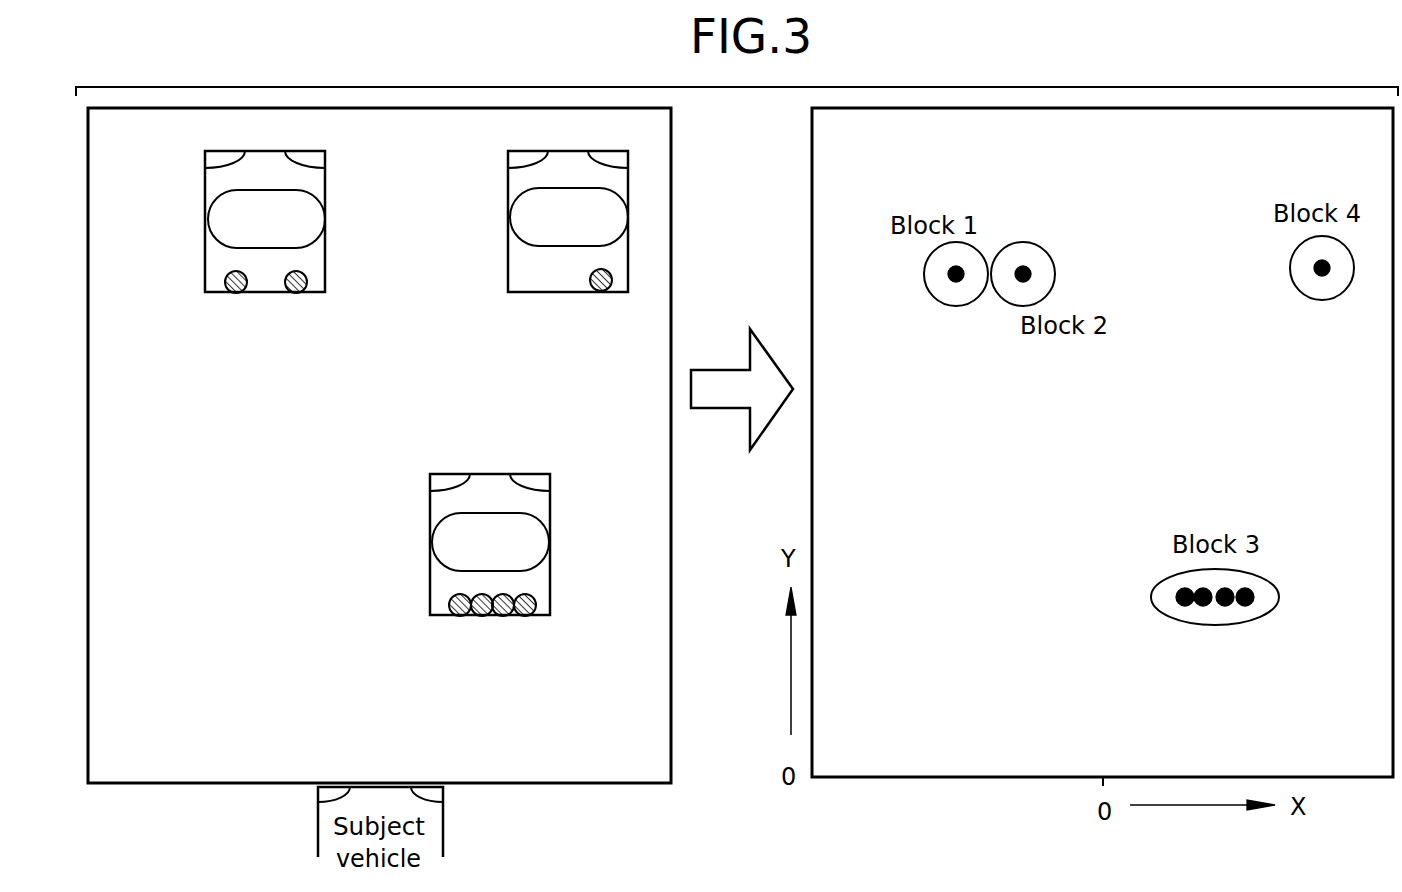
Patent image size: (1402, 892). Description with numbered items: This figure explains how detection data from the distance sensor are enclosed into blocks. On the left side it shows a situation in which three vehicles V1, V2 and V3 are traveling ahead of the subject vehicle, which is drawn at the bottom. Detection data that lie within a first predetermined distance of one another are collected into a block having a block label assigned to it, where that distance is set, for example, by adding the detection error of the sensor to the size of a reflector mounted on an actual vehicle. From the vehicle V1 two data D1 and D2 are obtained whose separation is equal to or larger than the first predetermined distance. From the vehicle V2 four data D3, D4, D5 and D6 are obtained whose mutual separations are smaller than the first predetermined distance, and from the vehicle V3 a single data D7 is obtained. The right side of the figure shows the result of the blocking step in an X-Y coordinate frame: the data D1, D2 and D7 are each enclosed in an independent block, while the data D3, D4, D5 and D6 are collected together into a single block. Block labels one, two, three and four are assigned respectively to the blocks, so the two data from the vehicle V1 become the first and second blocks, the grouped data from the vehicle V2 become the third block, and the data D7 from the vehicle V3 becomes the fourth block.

The vehicle V1 is at (205, 188).
The vehicle V2 is at (440, 512).
The vehicle V3 is at (508, 197).
The detection data D1 is at (236, 294).
The detection data D2 is at (296, 294).
The detection data D3 is at (460, 617).
The detection data D4 is at (482, 605).
The detection data D5 is at (503, 605).
The detection data D6 is at (525, 605).
The detection data D7 is at (601, 292).